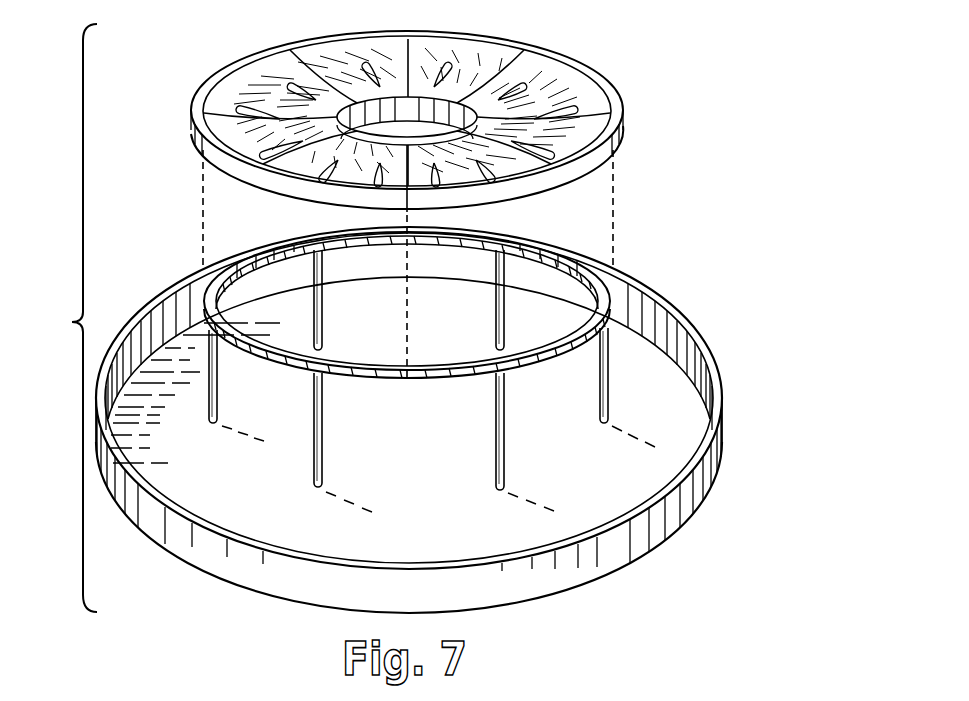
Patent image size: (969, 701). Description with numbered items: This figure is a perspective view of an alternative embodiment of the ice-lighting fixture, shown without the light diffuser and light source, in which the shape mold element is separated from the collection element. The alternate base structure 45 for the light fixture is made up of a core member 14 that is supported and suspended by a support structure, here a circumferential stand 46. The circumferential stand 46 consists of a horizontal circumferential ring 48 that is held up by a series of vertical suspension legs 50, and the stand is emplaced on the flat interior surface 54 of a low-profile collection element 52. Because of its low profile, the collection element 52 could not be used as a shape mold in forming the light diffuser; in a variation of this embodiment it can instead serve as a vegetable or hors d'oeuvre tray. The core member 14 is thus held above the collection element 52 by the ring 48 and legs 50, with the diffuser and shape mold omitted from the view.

The core member 14 is at (662, 105).
The alternate base structure 45 is at (65, 318).
The circumferential stand 46 is at (622, 246).
The horizontal circumferential ring 48 is at (397, 381).
The vertical suspension legs 50 is at (599, 373).
The low-profile collection element 52 is at (720, 345).
The flat interior surface 54 is at (422, 500).